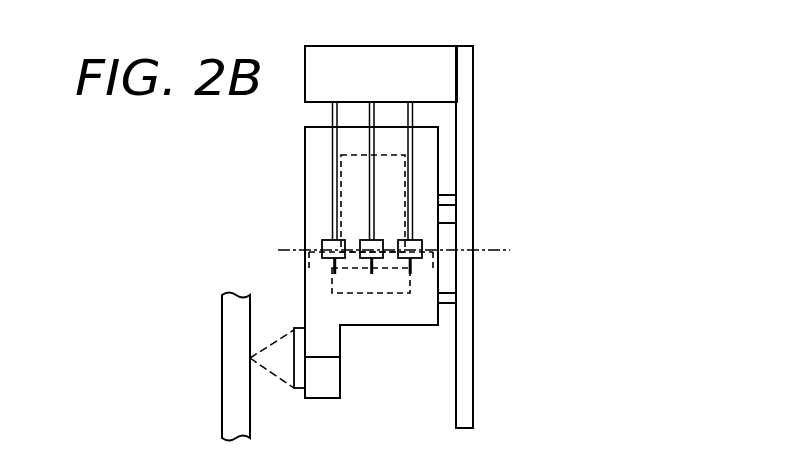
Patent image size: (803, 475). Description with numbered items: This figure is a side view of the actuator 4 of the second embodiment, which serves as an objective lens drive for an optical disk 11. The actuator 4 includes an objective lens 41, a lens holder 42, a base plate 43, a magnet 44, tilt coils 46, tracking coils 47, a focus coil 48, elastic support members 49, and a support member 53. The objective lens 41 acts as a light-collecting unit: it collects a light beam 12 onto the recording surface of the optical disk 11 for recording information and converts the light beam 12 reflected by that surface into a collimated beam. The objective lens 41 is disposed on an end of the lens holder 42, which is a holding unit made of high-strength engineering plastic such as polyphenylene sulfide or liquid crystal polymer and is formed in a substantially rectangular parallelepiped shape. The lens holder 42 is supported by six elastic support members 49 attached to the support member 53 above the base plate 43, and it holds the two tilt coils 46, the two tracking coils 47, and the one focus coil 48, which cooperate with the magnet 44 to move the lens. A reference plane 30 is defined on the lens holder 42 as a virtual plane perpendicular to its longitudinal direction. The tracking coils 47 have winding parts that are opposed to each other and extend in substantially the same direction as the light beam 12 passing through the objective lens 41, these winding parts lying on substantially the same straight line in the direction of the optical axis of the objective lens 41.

The actuator 4 is at (433, 32).
The optical disk 11 is at (232, 320).
The light beam 12 is at (278, 347).
The reference plane 30 is at (496, 248).
The objective lens 41 is at (296, 388).
The lens holder 42 is at (397, 318).
The base plate 43 is at (465, 388).
The magnet 44 is at (375, 291).
The tilt coils 46 is at (309, 268).
The tracking coils 47 is at (433, 268).
The focus coil 48 is at (347, 167).
The elastic support members 49 is at (410, 113).
The support member 53 is at (328, 58).